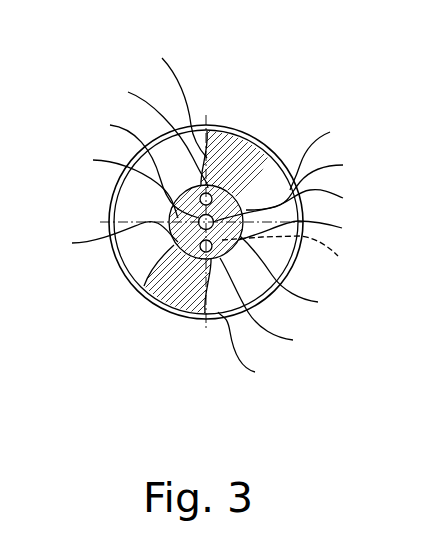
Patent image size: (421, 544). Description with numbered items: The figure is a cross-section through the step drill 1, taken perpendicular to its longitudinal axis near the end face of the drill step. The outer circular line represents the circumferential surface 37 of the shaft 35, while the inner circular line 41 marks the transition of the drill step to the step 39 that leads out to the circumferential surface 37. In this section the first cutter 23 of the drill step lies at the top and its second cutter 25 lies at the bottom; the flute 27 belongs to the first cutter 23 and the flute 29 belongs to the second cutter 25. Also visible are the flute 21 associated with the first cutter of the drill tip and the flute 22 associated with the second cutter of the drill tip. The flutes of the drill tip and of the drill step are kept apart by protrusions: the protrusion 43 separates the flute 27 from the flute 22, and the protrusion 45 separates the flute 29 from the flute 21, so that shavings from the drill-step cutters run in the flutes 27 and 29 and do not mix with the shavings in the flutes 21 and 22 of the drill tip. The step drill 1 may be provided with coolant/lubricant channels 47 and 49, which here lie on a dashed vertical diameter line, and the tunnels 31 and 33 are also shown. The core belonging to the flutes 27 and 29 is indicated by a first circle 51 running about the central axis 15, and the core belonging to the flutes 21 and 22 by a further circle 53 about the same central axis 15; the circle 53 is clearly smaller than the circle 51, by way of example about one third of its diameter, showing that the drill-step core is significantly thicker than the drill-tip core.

The step drill 1 is at (143, 303).
The central axis 15 is at (293, 258).
The flute 21 is at (292, 203).
The flute 22 is at (120, 183).
The first cutter 23 is at (168, 104).
The second cutter 25 is at (251, 350).
The flute 27 is at (154, 134).
The flute 29 is at (271, 307).
The tunnel 31 is at (170, 311).
The tunnel 33 is at (250, 134).
The shaft 35 is at (211, 129).
The circumferential surface 37 is at (228, 127).
The step 39 is at (324, 154).
The inner circular line 41 is at (309, 180).
The protrusion 43 is at (139, 164).
The protrusion 45 is at (293, 277).
The coolant/lubricant channel 47 is at (238, 199).
The coolant/lubricant channel 49 is at (136, 268).
The first circle 51 is at (304, 230).
The further circle 53 is at (109, 239).